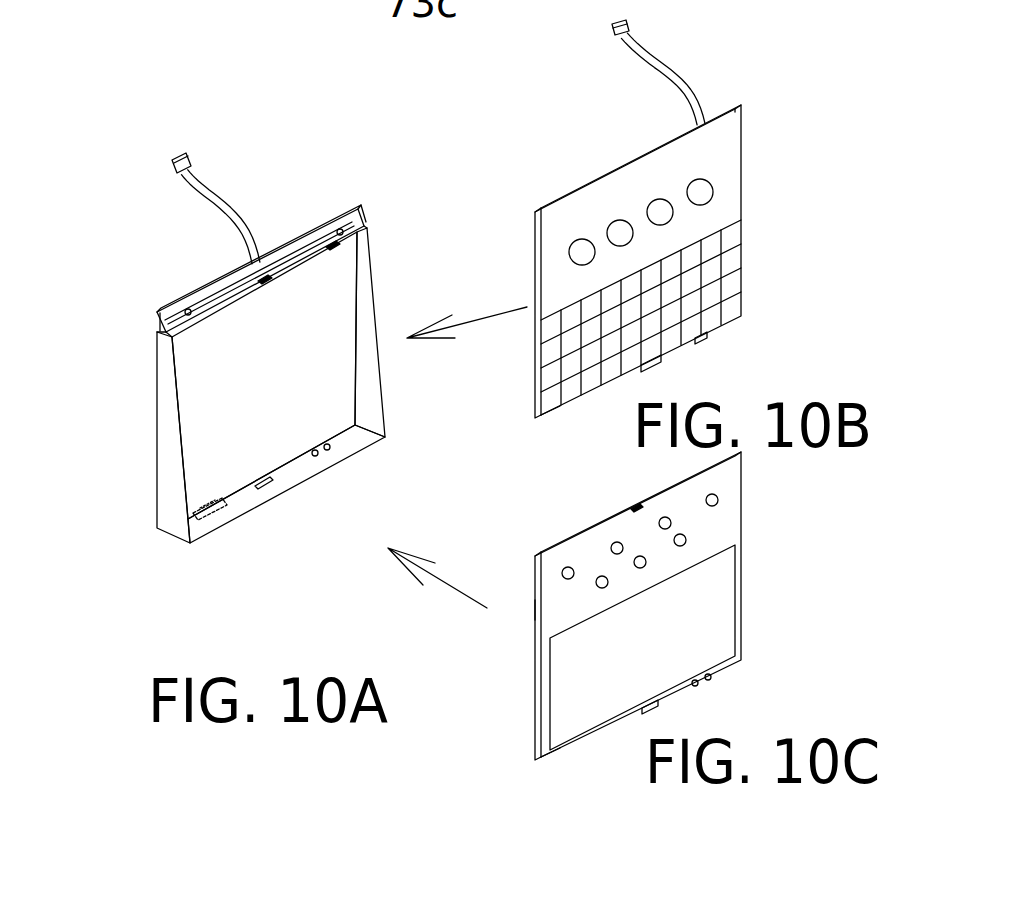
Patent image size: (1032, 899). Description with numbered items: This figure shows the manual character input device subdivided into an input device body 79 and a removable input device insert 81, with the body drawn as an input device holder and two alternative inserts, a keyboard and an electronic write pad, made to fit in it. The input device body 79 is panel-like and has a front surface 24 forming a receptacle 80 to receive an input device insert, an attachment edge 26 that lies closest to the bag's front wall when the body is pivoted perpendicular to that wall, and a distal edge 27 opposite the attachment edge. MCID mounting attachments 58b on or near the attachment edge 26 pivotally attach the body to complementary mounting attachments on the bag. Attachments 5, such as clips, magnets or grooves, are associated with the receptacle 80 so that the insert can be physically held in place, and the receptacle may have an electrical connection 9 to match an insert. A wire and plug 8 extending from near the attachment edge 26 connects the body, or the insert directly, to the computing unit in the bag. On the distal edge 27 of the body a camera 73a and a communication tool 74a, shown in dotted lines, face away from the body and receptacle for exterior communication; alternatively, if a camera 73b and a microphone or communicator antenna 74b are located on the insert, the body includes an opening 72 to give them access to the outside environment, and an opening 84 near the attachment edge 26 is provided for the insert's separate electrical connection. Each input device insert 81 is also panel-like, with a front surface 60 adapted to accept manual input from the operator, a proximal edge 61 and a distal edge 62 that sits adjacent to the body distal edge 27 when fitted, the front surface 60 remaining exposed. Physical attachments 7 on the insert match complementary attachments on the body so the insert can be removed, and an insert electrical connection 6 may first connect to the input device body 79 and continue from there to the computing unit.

In FIG. 10A, the attachments 5 is at (273, 479).
In FIG. 10C, the insert electrical connection 6 is at (633, 506).
In FIG. 10C, the physical attachments 7 is at (670, 702).
In FIG. 10A, the wire and plug 8 is at (233, 212).
In FIG. 10B, the wire and plug 8 is at (672, 75).
In FIG. 10A, the electrical connection 9 is at (268, 278).
In FIG. 10A, the front surface 24 is at (207, 445).
In FIG. 10A, the attachment edge 26 is at (220, 277).
In FIG. 10A, the distal edge 27 is at (250, 500).
In FIG. 10A, the MCID mounting attachments 58b is at (296, 252).
In FIG. 10B, the front surface 60 is at (725, 188).
In FIG. 10C, the front surface 60 is at (713, 527).
In FIG. 10B, the proximal edge 61 is at (560, 197).
In FIG. 10C, the proximal edge 61 is at (557, 540).
In FIG. 10B, the distal edge 62 is at (578, 398).
In FIG. 10C, the distal edge 62 is at (620, 720).
In FIG. 10A, the opening 72 is at (358, 432).
In FIG. 10A, the camera 73a is at (205, 518).
In FIG. 10B, the camera 73b is at (700, 340).
In FIG. 10A, the communication 74a is at (215, 512).
In FIG. 10B, the communicator antenna 74b is at (707, 332).
In FIG. 10A, the input device body 79 is at (152, 397).
In FIG. 10A, the receptacle 80 is at (313, 338).
In FIG. 10C, the input device insert 81 is at (528, 360).
In FIG. 10A, the opening 84 is at (362, 222).